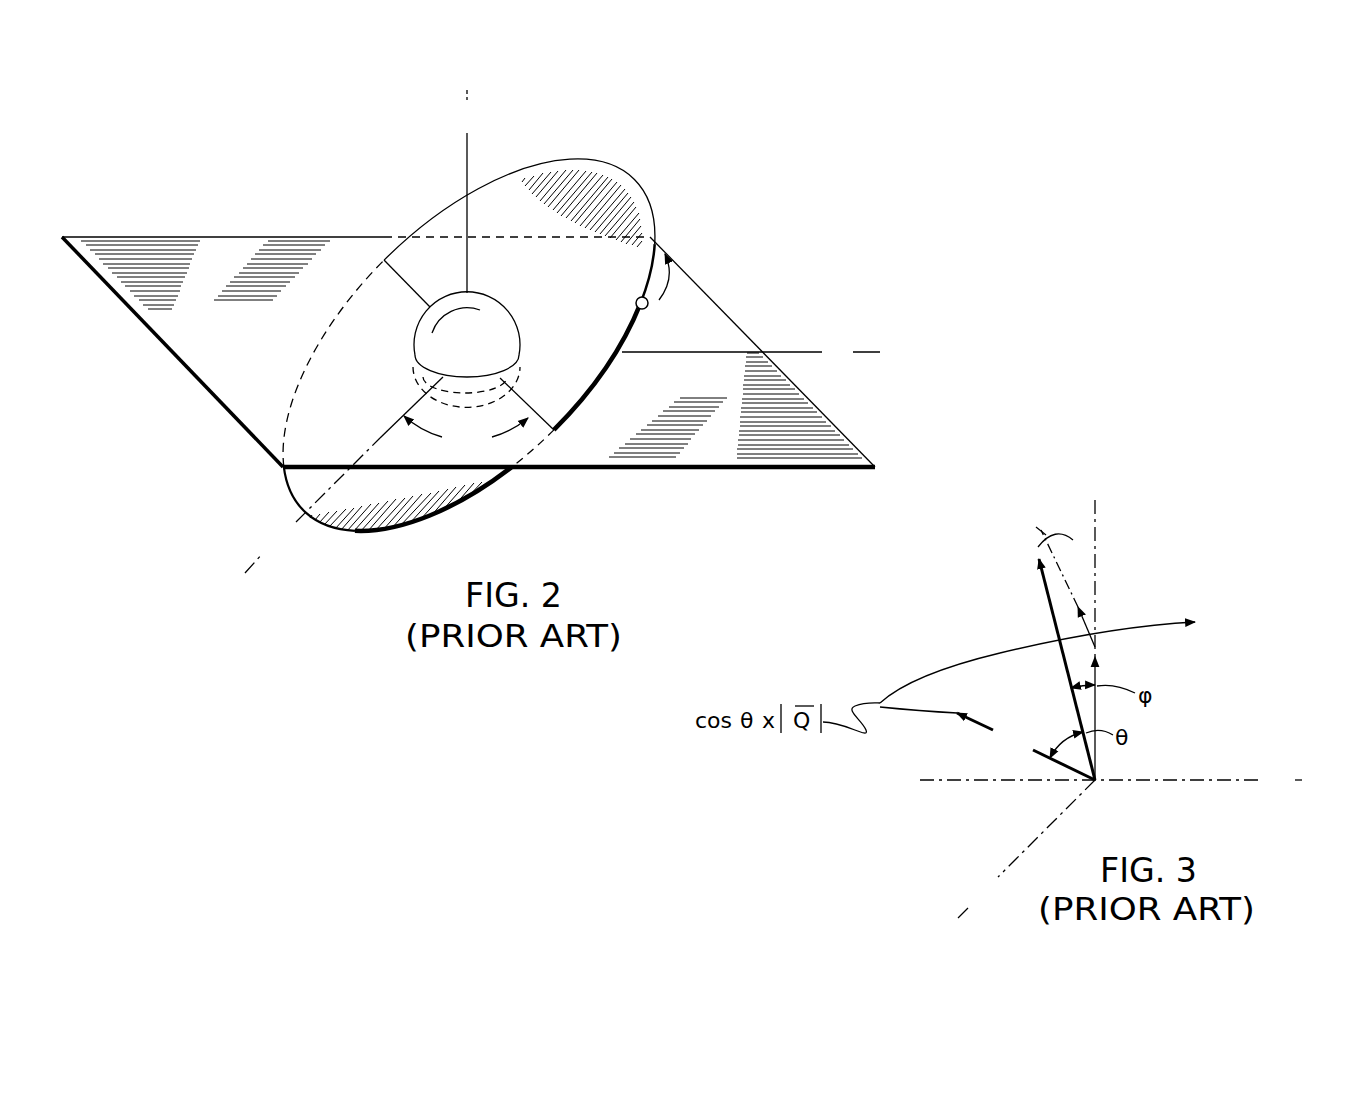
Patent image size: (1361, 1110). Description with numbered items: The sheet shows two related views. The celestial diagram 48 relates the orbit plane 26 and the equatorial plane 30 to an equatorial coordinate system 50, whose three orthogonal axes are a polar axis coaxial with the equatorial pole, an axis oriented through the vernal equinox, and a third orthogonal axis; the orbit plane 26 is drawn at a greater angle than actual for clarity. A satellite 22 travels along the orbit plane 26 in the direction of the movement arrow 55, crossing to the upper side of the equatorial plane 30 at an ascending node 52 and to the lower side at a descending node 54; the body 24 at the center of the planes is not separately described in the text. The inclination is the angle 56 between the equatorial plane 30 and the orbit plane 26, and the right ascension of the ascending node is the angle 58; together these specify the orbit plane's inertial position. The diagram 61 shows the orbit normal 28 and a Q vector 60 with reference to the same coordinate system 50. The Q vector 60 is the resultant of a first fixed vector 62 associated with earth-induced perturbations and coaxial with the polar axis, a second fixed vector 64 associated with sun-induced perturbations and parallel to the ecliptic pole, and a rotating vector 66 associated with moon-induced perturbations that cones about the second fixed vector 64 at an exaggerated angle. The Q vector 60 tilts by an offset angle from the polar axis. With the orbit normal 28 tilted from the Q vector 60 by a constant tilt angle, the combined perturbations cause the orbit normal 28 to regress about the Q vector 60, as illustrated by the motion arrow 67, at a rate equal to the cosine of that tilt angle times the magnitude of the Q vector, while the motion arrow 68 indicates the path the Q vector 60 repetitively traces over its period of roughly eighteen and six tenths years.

In FIG. 2, the satellite 22 is at (637, 300).
In FIG. 2, the spinning body (rotor sphere) 24 is at (430, 320).
In FIG. 2, the orbit plane 26 is at (600, 178).
In FIG. 3, the orbit normal 28 is at (987, 743).
In FIG. 2, the equatorial plane 30 is at (140, 250).
In FIG. 2, the celestial diagram 48 is at (362, 195).
In FIG. 2, the equatorial coordinate system 50 is at (463, 148).
In FIG. 3, the equatorial coordinate system 50 is at (1203, 775).
In FIG. 2, the ascending node 52 is at (547, 428).
In FIG. 2, the descending node 54 is at (383, 258).
In FIG. 2, the movement arrow 55 is at (672, 287).
In FIG. 2, the angle (inclination I) 56 is at (650, 450).
In FIG. 2, the angle (right ascension of the ascending node) 58 is at (466, 431).
In FIG. 3, the Q vector 60 is at (1050, 620).
In FIG. 3, the diagram 61 is at (1233, 627).
In FIG. 3, the first fixed vector 62 is at (1098, 674).
In FIG. 3, the second fixed vector 64 is at (1100, 613).
In FIG. 3, the rotating vector 66 is at (1065, 578).
In FIG. 3, the motion arrow 67 is at (930, 679).
In FIG. 3, the motion arrow 68 is at (1070, 535).